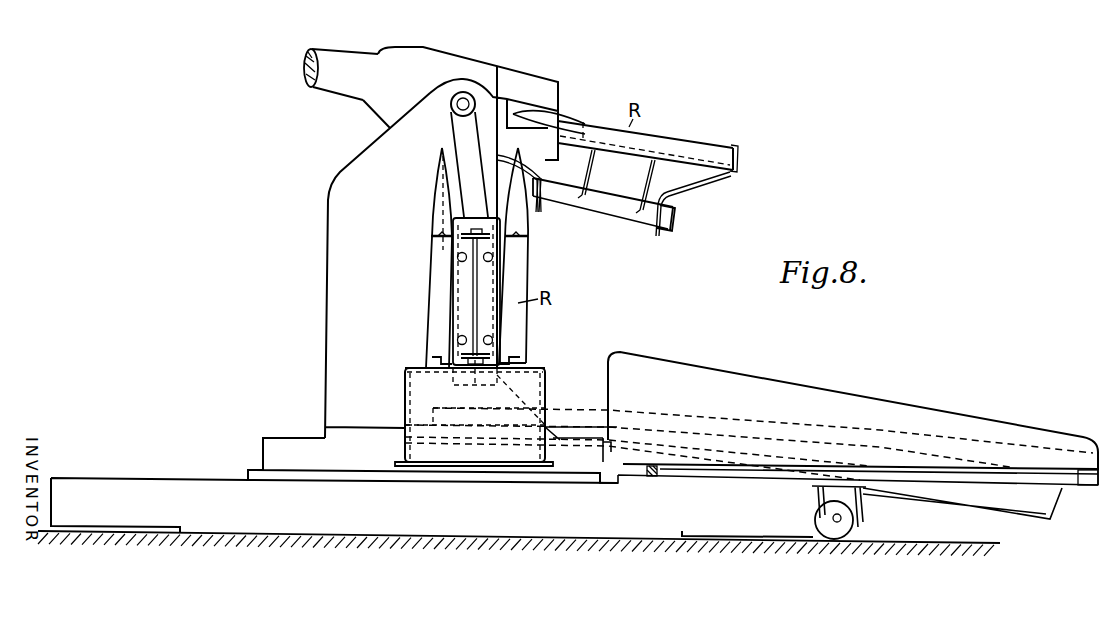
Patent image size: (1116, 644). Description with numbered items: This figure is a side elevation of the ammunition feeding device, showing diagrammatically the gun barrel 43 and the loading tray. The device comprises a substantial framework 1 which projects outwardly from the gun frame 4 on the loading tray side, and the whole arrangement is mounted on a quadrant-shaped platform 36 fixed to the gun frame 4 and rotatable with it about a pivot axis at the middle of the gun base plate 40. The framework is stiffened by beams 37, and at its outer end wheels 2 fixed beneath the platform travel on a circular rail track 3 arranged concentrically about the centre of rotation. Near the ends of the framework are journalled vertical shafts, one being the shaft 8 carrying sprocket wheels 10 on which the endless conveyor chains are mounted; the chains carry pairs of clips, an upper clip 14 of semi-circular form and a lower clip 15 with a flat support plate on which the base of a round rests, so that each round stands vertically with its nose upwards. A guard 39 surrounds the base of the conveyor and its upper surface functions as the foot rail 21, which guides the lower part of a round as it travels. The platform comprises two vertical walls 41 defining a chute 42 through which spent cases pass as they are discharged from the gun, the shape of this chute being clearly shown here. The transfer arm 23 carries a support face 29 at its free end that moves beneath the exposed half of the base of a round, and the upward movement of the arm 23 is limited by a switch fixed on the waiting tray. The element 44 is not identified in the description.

The framework 1 is at (463, 309).
The wheels 2 is at (842, 527).
The rail track 3 is at (850, 538).
The gun frame 4 is at (325, 266).
The vertical shaft 8 is at (472, 281).
The sprocket wheels 10 is at (477, 233).
The upper clip 14 is at (520, 236).
The lower clip 15 is at (516, 361).
The foot rail 21 is at (407, 367).
The arm 23 is at (452, 133).
The support face 29 is at (481, 381).
The quadrant-shaped platform 36 is at (628, 465).
The beams 37 is at (694, 477).
The guard 39 is at (410, 402).
The gun base plate 40 is at (197, 490).
The vertical walls 41 is at (713, 378).
The chute 42 is at (770, 402).
The gun barrel 43 is at (327, 89).
The supporting rod 44 is at (718, 170).